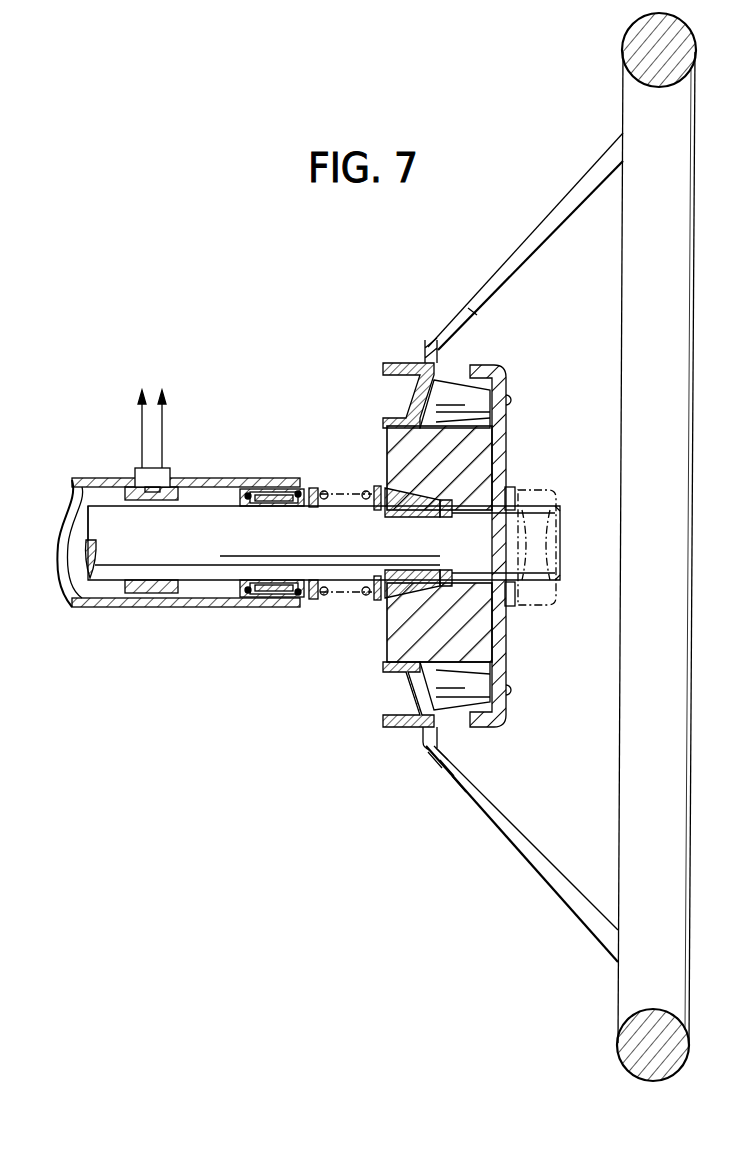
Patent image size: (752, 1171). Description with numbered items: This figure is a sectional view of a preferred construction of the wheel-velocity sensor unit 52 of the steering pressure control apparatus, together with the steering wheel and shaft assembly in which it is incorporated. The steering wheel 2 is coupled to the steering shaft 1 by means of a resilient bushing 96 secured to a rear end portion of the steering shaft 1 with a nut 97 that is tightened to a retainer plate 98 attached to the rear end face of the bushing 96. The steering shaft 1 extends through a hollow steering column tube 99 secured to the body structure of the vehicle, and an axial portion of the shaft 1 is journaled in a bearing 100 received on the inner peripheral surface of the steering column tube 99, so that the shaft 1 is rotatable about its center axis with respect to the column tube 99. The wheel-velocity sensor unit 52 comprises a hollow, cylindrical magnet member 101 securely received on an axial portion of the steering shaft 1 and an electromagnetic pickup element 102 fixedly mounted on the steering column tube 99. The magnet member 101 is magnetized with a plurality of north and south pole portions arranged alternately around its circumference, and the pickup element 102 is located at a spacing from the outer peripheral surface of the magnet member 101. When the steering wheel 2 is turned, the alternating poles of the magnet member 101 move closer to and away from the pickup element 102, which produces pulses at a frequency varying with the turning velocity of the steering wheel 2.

The steering shaft 1 is at (200, 506).
The steering wheel 2 is at (503, 838).
The wheel-velocity sensor unit 52 is at (170, 466).
The resilient bushing 96 is at (386, 630).
The nut 97 is at (522, 598).
The retainer plate 98 is at (508, 450).
The steering column tube 99 is at (188, 607).
The bearing 100 is at (256, 494).
The cylindrical magnet member 101 is at (150, 594).
The electromagnetic pickup element 102 is at (138, 469).